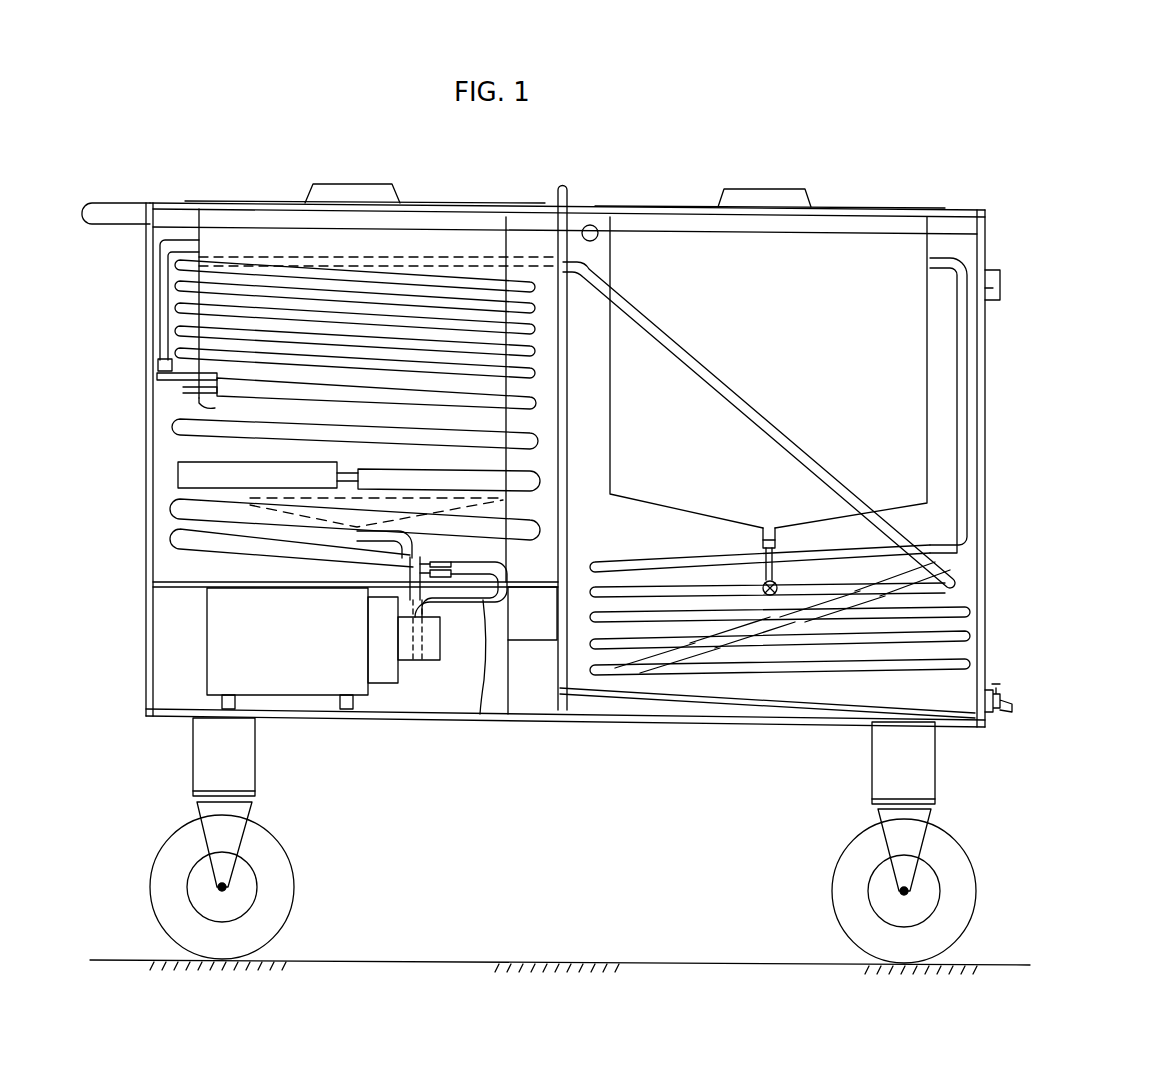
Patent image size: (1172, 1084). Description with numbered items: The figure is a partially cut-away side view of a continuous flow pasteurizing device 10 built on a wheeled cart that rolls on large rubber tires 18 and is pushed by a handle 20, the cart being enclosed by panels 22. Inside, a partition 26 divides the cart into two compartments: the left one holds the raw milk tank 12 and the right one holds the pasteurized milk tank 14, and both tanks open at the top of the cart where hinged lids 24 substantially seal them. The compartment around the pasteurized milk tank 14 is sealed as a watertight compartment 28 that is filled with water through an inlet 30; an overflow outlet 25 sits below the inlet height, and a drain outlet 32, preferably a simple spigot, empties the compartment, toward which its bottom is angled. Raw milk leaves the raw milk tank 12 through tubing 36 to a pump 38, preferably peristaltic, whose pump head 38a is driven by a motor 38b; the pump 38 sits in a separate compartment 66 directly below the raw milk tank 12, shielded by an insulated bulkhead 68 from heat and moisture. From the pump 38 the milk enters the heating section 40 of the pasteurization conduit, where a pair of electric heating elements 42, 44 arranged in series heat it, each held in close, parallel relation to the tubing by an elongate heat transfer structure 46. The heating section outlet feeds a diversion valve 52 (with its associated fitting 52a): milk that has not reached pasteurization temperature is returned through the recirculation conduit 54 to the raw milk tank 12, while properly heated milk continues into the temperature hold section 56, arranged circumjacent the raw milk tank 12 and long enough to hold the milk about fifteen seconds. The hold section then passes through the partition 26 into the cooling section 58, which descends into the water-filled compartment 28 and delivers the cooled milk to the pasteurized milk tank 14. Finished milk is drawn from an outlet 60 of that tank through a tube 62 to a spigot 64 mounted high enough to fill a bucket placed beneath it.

The pasteurizing device 10 is at (1010, 395).
The raw milk tank 12 is at (506, 240).
The pasteurized milk tank 14 is at (610, 440).
The rubber tires 18 is at (294, 886).
The handle 20 is at (115, 205).
The panels 22 is at (150, 495).
The lids 24 is at (240, 200).
The overflow outlet 25 is at (1000, 282).
The partition 26 is at (568, 452).
The watertight compartment 28 is at (618, 551).
The inlet 30 is at (590, 226).
The outlet 32 is at (1012, 700).
The tubing 36 is at (440, 562).
The pump 38 is at (332, 702).
The pump head 38a is at (455, 640).
The motor 38b is at (298, 700).
The heating section 40 is at (505, 574).
The heating element 42 is at (480, 714).
The heating element 44 is at (223, 411).
The elongate heat transfer structure 46 is at (180, 427).
The diversion valve 52 is at (157, 380).
The coupling 52a is at (158, 364).
The recirculation conduit 54 is at (165, 283).
The temperature hold section 56 is at (180, 308).
The cooling section 58 is at (782, 428).
The outlet 60 is at (777, 538).
The tube 62 is at (774, 567).
The spigot 64 is at (778, 590).
The compartment 66 is at (192, 684).
The insulated bulkhead 68 is at (180, 587).